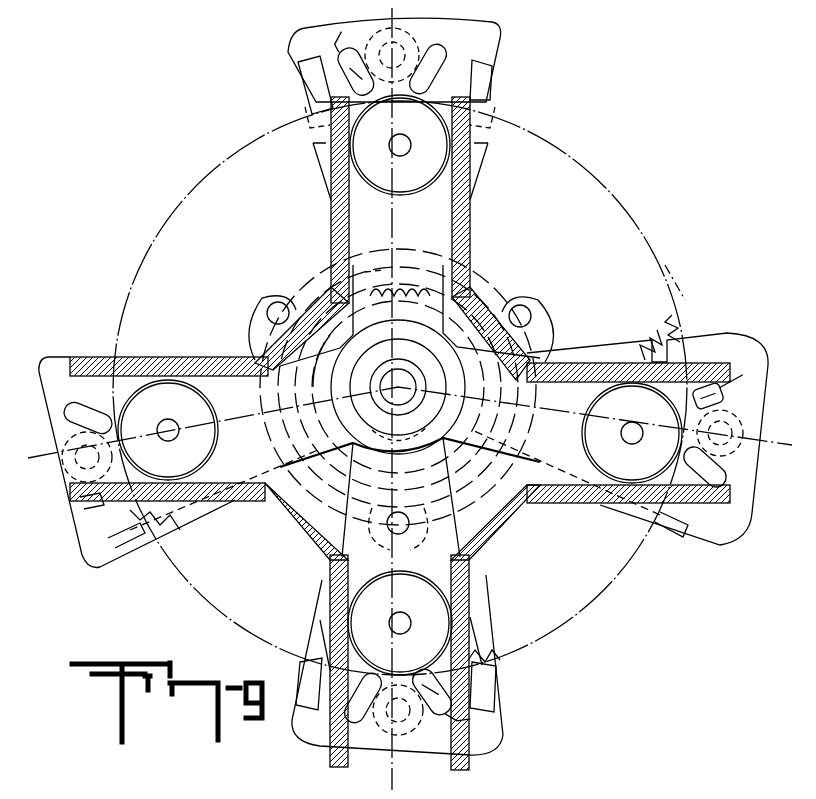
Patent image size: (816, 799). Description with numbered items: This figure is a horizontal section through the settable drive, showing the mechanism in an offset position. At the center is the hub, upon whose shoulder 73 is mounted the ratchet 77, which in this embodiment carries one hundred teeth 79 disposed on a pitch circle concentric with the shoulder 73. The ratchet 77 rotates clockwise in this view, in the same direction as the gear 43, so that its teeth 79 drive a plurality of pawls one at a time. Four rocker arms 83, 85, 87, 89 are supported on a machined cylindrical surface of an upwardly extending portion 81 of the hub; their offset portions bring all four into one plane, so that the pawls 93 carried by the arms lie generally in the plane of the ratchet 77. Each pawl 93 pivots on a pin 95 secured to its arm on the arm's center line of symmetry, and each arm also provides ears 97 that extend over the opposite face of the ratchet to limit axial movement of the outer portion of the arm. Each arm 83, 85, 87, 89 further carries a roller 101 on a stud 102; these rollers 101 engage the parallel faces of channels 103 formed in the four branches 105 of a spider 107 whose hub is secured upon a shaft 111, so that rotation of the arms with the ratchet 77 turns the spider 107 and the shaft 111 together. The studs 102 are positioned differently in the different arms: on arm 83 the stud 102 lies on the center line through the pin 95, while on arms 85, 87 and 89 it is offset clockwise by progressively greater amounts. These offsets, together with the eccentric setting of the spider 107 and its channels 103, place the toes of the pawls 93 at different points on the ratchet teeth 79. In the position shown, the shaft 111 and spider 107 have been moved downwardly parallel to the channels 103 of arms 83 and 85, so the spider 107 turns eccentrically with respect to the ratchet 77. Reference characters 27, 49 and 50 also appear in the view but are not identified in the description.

The shaft 27 is at (683, 302).
The gear 43 is at (388, 272).
The bore 49 is at (420, 392).
The hub 50 is at (418, 378).
The shoulder 73 is at (470, 490).
The ratchet 77 is at (622, 202).
The teeth 79 is at (680, 330).
The upwardly extending portion 81 is at (358, 375).
The rocker arm 83 is at (360, 425).
The rocker arm 85 is at (485, 45).
The rocker arm 87 is at (82, 560).
The rocker arm 89 is at (722, 530).
The pawl 93 is at (100, 505).
The pin 95 is at (395, 45).
The ears 97 is at (298, 85).
The roller 101 is at (412, 192).
The stud 102 is at (405, 150).
The channels 103 is at (349, 210).
The branches 105 is at (470, 232).
The spider 107 is at (532, 338).
The shaft 111 is at (425, 436).